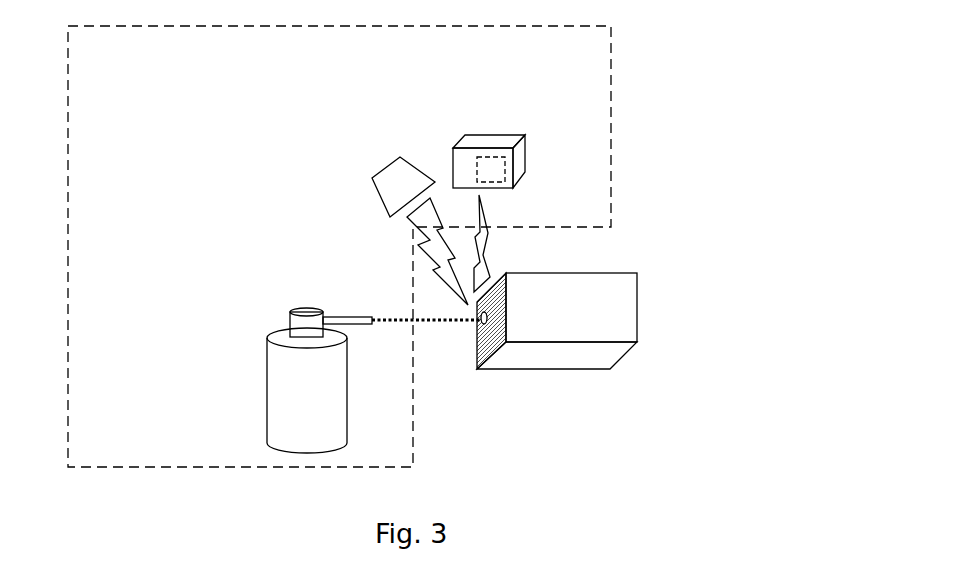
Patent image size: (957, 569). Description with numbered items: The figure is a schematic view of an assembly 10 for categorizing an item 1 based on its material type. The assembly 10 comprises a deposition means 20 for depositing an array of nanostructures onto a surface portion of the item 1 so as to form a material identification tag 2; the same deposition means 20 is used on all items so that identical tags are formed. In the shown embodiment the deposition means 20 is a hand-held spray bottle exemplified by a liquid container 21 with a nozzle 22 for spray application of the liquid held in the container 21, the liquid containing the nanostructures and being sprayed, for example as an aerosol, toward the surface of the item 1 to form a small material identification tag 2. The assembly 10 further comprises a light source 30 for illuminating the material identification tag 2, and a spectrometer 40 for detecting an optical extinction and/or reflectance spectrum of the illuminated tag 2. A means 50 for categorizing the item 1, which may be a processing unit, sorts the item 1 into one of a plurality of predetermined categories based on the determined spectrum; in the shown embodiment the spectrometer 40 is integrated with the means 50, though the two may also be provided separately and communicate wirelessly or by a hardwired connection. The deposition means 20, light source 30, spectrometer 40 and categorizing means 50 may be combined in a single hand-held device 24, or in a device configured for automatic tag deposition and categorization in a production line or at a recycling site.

The item 1 is at (552, 360).
The material identification tag 2 is at (486, 326).
The assembly 10 is at (227, 165).
The deposition means 20 is at (293, 282).
The liquid container 21 is at (273, 418).
The nozzle 22 is at (362, 312).
The hand-held device 24 is at (611, 65).
The light source 30 is at (387, 167).
The spectrometer 40 is at (490, 138).
The means for categorizing the item 50 is at (505, 170).